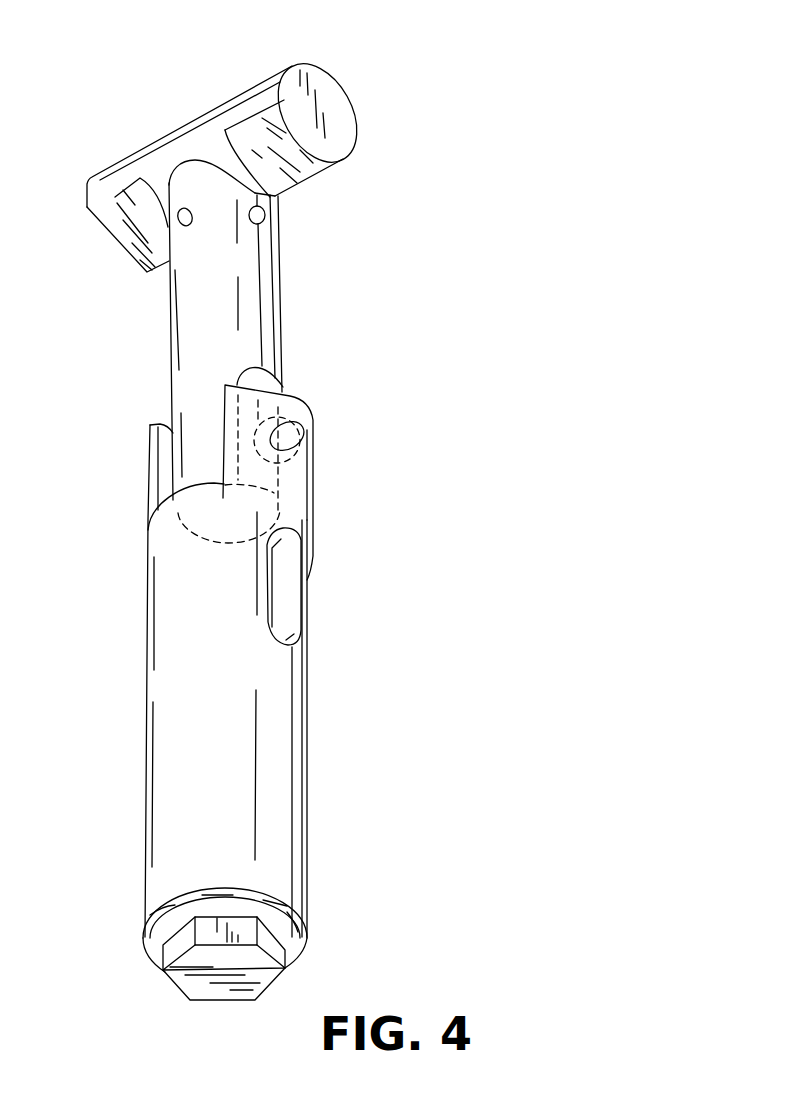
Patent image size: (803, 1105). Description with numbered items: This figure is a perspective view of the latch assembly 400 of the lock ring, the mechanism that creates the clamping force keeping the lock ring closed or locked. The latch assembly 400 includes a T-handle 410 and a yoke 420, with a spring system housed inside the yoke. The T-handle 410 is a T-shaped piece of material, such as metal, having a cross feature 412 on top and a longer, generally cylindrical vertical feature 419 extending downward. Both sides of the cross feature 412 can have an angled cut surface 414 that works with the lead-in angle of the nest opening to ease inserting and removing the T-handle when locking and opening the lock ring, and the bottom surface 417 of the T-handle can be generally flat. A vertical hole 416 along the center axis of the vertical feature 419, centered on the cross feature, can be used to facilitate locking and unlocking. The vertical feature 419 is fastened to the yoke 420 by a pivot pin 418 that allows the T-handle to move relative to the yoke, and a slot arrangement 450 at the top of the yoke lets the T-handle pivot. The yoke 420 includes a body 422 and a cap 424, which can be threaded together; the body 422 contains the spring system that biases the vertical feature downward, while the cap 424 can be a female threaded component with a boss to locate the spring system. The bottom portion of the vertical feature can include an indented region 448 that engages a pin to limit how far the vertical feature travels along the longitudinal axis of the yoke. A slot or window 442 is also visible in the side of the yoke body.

The latch assembly 400 is at (360, 432).
The T-handle 410 is at (290, 266).
The cross feature 412 is at (241, 92).
The angled cut surface 414 is at (317, 162).
The vertical hole 416 is at (177, 207).
The bottom surface 417 is at (229, 129).
The pivot pin 418 is at (291, 434).
The vertical feature 419 is at (186, 330).
The yoke 420 is at (320, 758).
The body 422 is at (299, 690).
The cap 424 is at (266, 970).
The slot 442 is at (285, 600).
The indented region 448 is at (259, 362).
The slot arrangement 450 is at (164, 466).